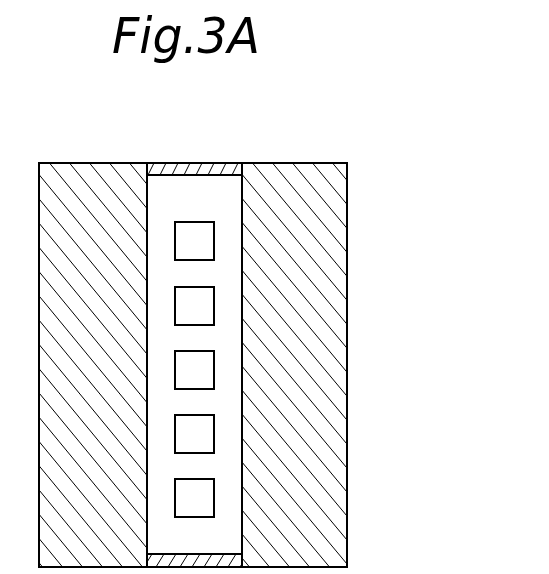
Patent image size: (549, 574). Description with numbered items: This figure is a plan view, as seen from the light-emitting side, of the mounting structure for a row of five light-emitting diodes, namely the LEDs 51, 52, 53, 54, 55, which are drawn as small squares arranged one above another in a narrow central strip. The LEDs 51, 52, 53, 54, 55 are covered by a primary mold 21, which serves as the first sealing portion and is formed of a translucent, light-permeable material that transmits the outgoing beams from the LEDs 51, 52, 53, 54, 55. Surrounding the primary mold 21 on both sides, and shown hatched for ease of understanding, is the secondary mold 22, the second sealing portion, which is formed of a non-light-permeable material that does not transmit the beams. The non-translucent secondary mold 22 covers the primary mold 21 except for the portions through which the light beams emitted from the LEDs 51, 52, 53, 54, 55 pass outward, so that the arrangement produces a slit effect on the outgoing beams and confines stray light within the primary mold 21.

The primary mold 21 is at (217, 188).
The secondary mold 22 is at (327, 183).
The LED 51 is at (203, 239).
The LED 52 is at (203, 303).
The LED 53 is at (203, 368).
The LED 54 is at (203, 433).
The LED 55 is at (203, 498).